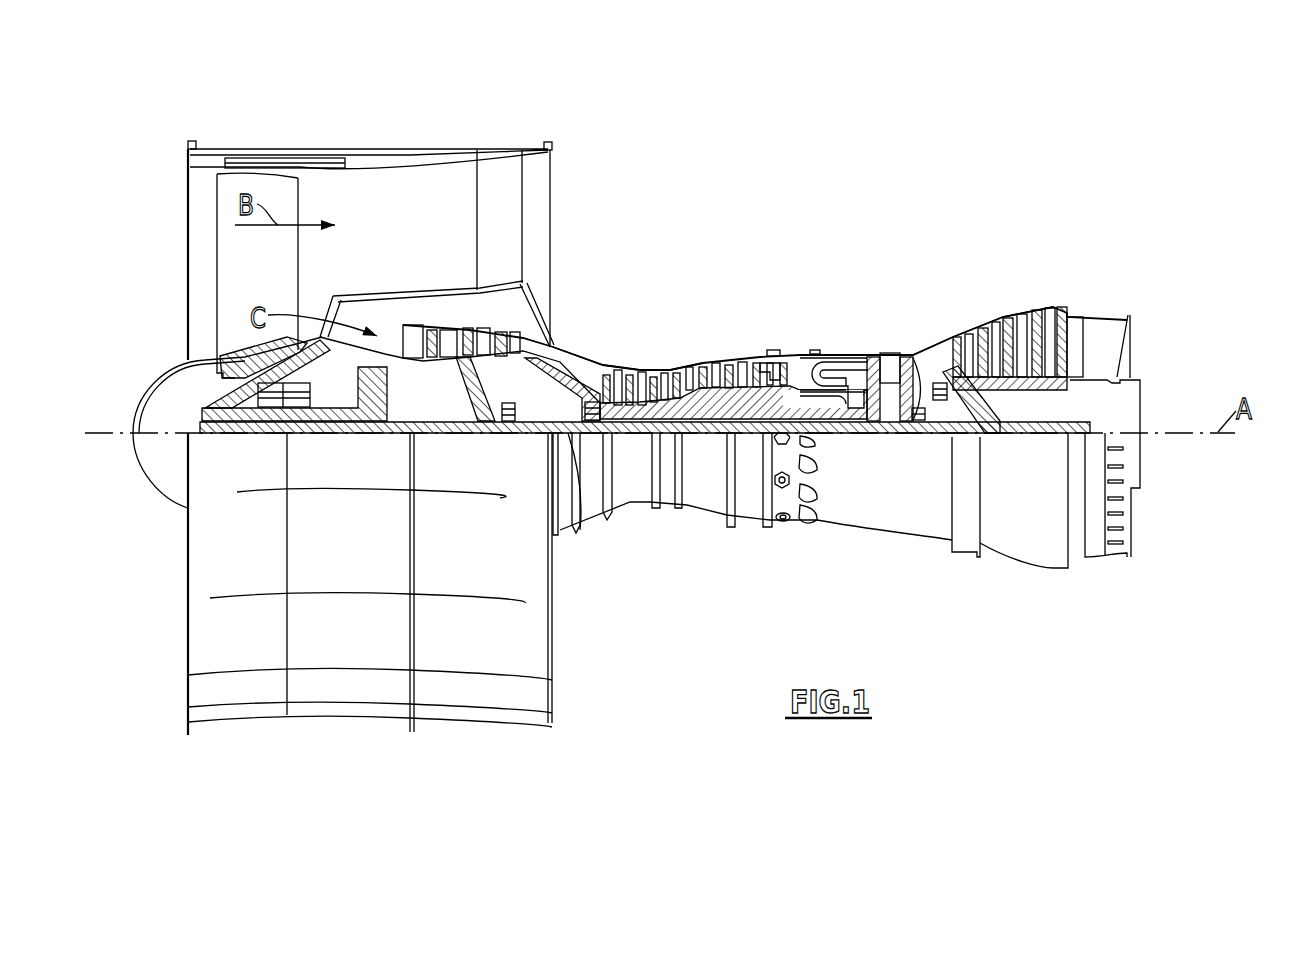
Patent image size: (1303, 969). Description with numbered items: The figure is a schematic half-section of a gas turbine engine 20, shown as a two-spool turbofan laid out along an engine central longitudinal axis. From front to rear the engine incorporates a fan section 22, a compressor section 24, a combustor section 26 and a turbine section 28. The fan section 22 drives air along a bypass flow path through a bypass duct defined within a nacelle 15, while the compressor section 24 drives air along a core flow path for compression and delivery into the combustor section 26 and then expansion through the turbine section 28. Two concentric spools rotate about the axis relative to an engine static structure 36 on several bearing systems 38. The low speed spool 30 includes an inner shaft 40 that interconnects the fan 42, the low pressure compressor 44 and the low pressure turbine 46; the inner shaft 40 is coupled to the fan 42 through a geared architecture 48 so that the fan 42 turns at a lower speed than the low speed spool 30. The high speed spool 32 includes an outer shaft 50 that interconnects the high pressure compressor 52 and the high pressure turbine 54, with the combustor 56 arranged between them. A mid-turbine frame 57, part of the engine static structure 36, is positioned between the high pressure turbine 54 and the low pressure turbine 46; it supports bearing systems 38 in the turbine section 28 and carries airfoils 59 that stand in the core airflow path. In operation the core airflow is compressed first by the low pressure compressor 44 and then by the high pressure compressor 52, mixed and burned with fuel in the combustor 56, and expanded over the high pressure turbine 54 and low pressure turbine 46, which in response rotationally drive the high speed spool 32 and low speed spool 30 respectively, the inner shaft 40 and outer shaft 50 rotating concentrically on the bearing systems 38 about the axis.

The gas turbine engine 20 is at (830, 200).
The fan section 22 is at (300, 144).
The nacelle 15 is at (372, 150).
The fan 42 is at (271, 281).
The low pressure compressor 44 is at (470, 340).
The compressor section 24 is at (599, 342).
The high pressure compressor 52 is at (688, 400).
The high speed spool 32 is at (745, 405).
The combustor section 26 is at (820, 330).
The combustor 56 is at (828, 378).
The high pressure turbine 54 is at (891, 354).
The mid-turbine frame 57 is at (934, 346).
The airfoils 59 is at (959, 397).
The turbine section 28 is at (969, 293).
The low pressure turbine 46 is at (1017, 330).
The bearing systems 38 is at (508, 428).
The outer shaft 50 is at (836, 428).
The low speed spool 30 is at (707, 436).
The engine static structure 36 is at (748, 520).
The inner shaft 40 is at (575, 530).
The geared architecture 48 is at (373, 433).